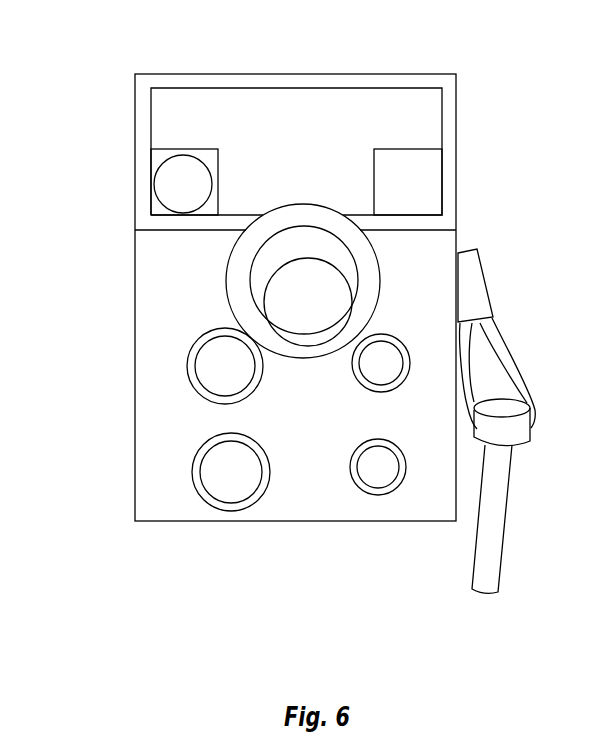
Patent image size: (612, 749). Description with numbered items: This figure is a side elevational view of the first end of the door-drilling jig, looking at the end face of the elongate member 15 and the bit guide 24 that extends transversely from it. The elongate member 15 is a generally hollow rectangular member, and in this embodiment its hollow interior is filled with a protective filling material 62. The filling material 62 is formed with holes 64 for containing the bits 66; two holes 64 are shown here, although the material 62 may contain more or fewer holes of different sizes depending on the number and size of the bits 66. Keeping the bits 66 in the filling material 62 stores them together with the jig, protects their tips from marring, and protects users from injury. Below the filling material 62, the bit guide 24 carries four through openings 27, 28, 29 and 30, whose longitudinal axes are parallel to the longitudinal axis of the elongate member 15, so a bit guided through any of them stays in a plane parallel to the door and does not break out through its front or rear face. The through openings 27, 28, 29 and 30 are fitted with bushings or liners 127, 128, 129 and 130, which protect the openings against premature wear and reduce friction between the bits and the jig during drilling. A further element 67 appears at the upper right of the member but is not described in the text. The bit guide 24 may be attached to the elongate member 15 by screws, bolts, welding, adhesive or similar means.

The elongate member 15 is at (338, 72).
The bit guide 24 is at (160, 443).
The through opening 27 is at (378, 472).
The through opening 28 is at (230, 485).
The through opening 29 is at (387, 360).
The through opening 30 is at (215, 373).
The protective filling material 62 is at (232, 88).
The holes 64 is at (158, 157).
The bits 66 is at (180, 190).
The control window 67 is at (422, 162).
The bushing 127 is at (398, 483).
The bushing 128 is at (257, 495).
The bushing 129 is at (458, 252).
The bushing 130 is at (197, 352).